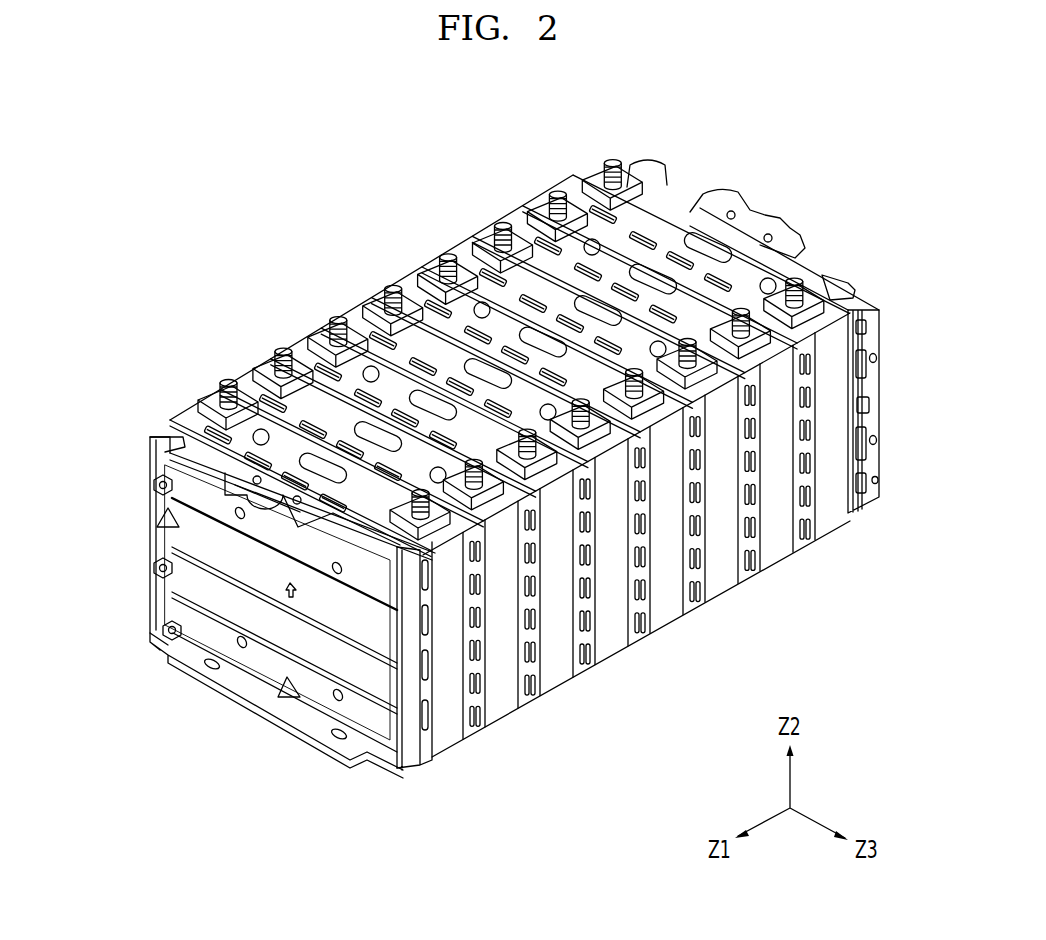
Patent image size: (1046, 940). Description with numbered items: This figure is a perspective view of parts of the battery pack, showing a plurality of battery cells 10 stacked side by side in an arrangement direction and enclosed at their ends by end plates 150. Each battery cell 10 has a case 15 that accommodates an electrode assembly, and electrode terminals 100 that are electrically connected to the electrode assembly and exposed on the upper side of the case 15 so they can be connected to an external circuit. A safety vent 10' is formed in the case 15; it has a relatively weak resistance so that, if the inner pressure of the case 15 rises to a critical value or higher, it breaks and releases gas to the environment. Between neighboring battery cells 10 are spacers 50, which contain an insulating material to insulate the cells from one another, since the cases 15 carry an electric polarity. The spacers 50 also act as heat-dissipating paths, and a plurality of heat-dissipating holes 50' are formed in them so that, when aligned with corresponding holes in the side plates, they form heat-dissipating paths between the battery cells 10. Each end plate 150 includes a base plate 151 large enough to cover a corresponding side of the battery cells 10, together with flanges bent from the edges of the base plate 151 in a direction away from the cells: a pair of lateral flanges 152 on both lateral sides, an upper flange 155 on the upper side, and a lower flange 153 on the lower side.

The battery cell 10 is at (472, 669).
The safety vent 10' is at (743, 200).
The case 15 is at (607, 637).
The spacer 50 is at (455, 676).
The heat-dissipating hole 50' is at (558, 621).
The electrode terminal 100 is at (587, 417).
The end plate 150 is at (419, 778).
The base plate 151 is at (213, 613).
The lateral flange 152 is at (158, 463).
The lower flange 153 is at (256, 697).
The upper flange 155 is at (250, 484).